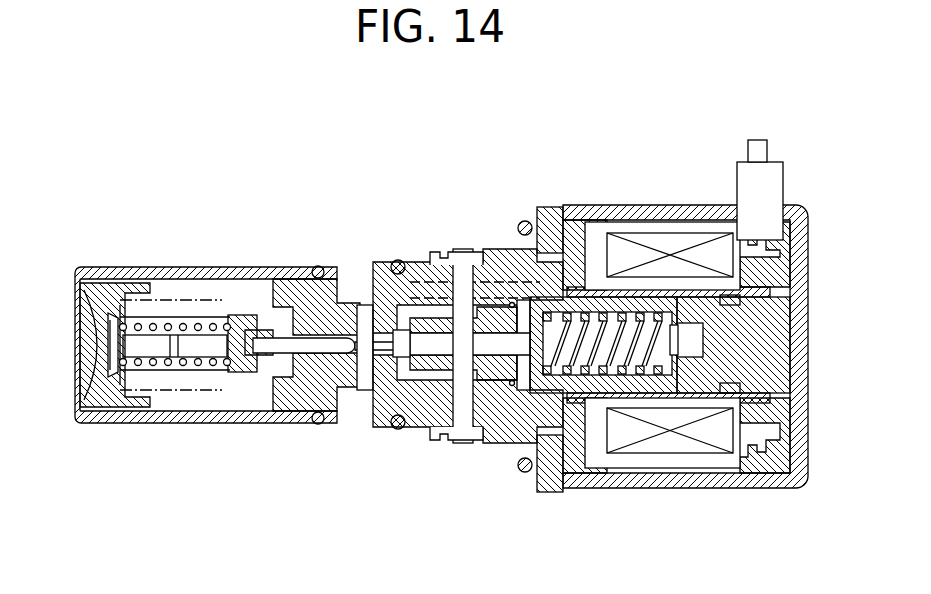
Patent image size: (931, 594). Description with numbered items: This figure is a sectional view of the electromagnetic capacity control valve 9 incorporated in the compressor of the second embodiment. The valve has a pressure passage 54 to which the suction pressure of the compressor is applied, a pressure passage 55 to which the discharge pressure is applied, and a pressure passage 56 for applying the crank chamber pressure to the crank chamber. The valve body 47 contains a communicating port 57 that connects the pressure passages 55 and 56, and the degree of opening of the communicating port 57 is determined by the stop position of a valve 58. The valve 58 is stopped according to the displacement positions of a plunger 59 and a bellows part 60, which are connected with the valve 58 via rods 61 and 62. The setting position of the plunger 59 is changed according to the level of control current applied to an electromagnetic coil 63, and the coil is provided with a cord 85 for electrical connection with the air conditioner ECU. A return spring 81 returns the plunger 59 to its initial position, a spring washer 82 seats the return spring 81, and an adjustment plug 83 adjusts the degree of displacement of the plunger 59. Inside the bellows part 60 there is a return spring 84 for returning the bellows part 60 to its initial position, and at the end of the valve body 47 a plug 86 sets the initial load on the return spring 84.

The electromagnetic capacity control valve 9 is at (133, 237).
The valve body 47 is at (428, 415).
The pressure passage 54 is at (197, 420).
The pressure passage 55 is at (462, 430).
The pressure passage 56 is at (364, 380).
The communicating port 57 is at (355, 336).
The valve 58 is at (399, 318).
The plunger 59 is at (538, 248).
The bellows part 60 is at (178, 298).
The rod 61 is at (288, 290).
The rod 62 is at (455, 355).
The electromagnetic coil 63 is at (710, 257).
The return spring 81 is at (620, 311).
The spring washer 82 is at (690, 296).
The adjustment plug 83 is at (757, 330).
The return spring 84 is at (172, 368).
The cord 85 is at (768, 150).
The plug 86 is at (92, 322).